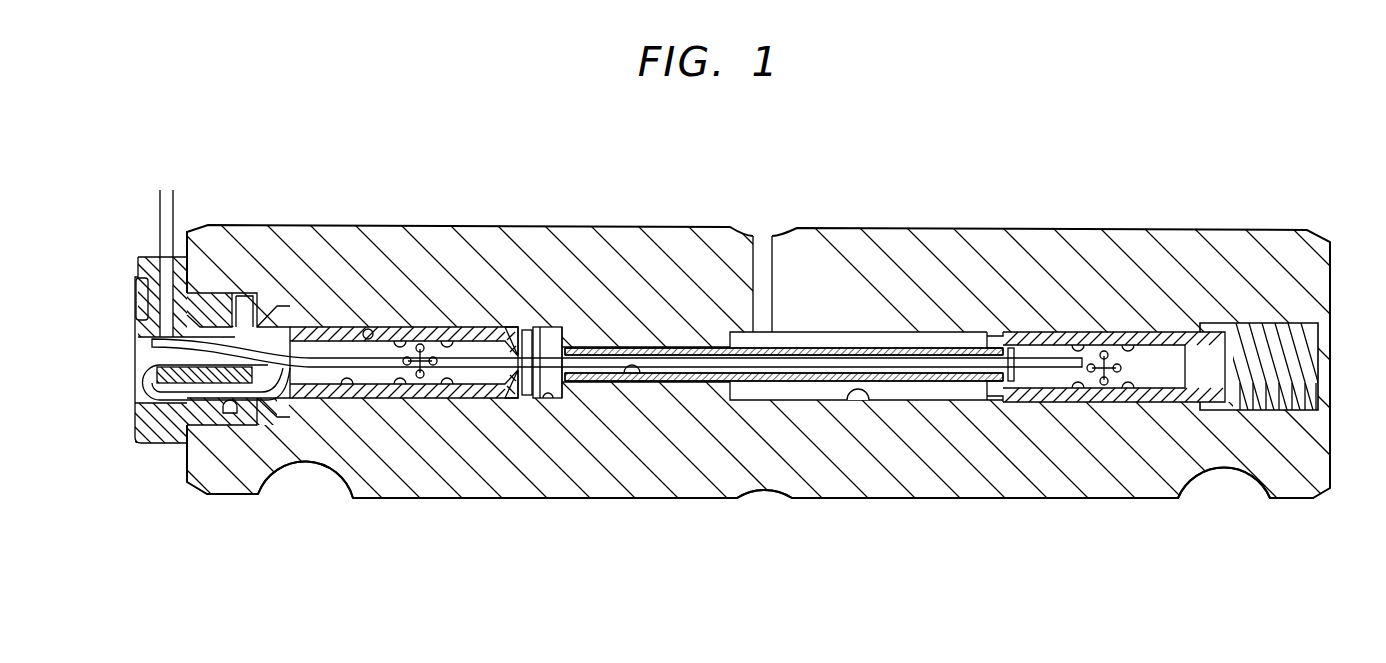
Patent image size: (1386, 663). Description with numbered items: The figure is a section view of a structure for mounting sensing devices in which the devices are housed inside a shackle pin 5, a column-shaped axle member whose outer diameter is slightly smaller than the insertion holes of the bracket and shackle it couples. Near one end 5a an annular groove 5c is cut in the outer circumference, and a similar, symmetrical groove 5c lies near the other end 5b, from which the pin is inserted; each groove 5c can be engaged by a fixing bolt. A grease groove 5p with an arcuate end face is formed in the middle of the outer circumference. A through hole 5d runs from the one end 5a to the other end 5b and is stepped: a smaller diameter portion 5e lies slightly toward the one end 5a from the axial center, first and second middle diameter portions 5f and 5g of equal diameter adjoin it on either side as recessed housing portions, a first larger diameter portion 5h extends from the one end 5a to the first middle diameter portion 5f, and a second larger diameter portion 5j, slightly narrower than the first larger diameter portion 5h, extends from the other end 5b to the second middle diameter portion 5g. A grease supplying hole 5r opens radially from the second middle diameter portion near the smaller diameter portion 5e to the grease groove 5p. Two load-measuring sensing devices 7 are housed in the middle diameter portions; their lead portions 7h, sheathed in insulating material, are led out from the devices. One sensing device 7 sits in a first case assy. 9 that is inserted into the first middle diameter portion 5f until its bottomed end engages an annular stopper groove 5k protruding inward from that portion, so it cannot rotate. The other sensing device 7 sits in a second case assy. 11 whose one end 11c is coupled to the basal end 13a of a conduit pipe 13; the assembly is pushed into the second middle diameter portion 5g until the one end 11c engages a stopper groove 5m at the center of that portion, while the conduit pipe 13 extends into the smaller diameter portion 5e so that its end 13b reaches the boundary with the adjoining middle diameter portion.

The shackle pin 5 is at (650, 227).
The one end 5a is at (185, 458).
The other end 5b is at (1333, 435).
The annular groove 5c is at (322, 472).
The through hole 5d is at (853, 340).
The smaller diameter portion 5e is at (640, 380).
The first middle diameter portion 5f is at (555, 400).
The second middle diameter portion 5g is at (866, 404).
The first larger diameter portion 5h is at (228, 413).
The second larger diameter portion 5j is at (1292, 382).
The annular stopper groove 5k is at (528, 392).
The stopper groove 5m is at (997, 397).
The grease groove 5p is at (762, 493).
The grease supplying hole 5r is at (762, 247).
The sensing device 7 is at (463, 380).
The lead portions 7h is at (323, 345).
The first case assy. 9 is at (404, 316).
The second case assy. 11 is at (1089, 318).
The one end 11c is at (963, 345).
The conduit pipe 13 is at (692, 345).
The basal end 13a is at (960, 382).
The end 13b is at (582, 345).